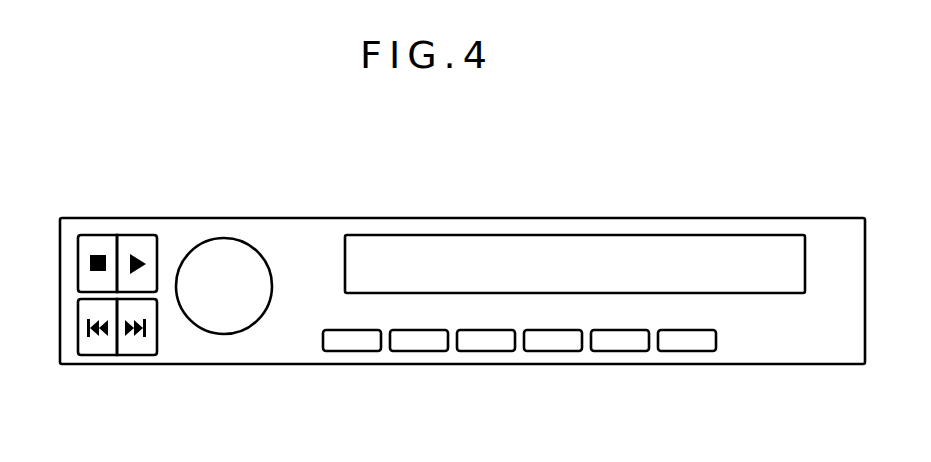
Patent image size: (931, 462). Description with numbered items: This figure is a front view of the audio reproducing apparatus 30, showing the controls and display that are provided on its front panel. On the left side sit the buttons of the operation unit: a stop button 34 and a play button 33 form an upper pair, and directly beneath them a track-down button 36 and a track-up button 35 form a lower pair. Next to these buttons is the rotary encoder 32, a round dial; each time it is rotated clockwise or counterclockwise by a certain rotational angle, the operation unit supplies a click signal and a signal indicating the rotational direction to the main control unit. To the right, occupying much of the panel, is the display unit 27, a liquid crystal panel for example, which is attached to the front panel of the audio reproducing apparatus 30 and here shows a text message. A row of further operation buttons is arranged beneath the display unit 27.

The audio reproducing apparatus 30 is at (804, 203).
The display unit 27 is at (575, 235).
The rotary encoder 32 is at (223, 240).
The play button 33 is at (132, 235).
The stop button 34 is at (88, 236).
The track-up button 35 is at (135, 357).
The track-down button 36 is at (89, 356).